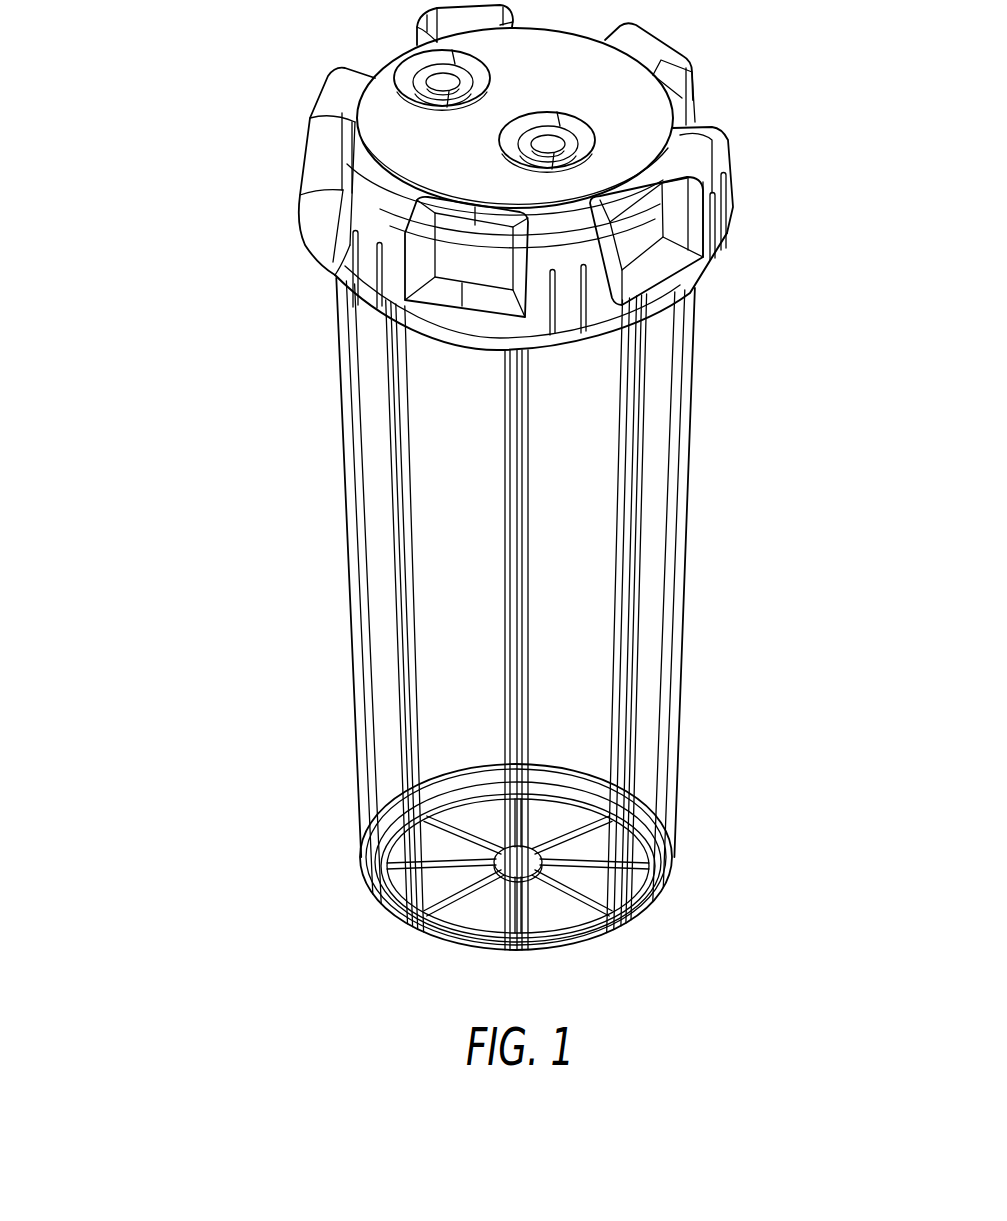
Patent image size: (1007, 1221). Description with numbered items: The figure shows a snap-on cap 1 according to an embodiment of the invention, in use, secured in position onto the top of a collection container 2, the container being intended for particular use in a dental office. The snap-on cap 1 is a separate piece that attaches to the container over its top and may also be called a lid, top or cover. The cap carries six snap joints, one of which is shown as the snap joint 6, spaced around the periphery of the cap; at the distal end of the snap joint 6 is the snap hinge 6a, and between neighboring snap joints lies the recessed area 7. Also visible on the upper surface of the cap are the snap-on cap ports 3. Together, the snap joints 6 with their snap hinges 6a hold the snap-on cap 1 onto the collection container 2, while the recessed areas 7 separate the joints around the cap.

The snap-on cap 1 is at (290, 165).
The collection container 2 is at (305, 487).
The snap-on cap ports 3 is at (517, 82).
The snap joint 6 is at (612, 135).
The snap hinge 6a is at (745, 247).
The recessed area 7 is at (725, 285).